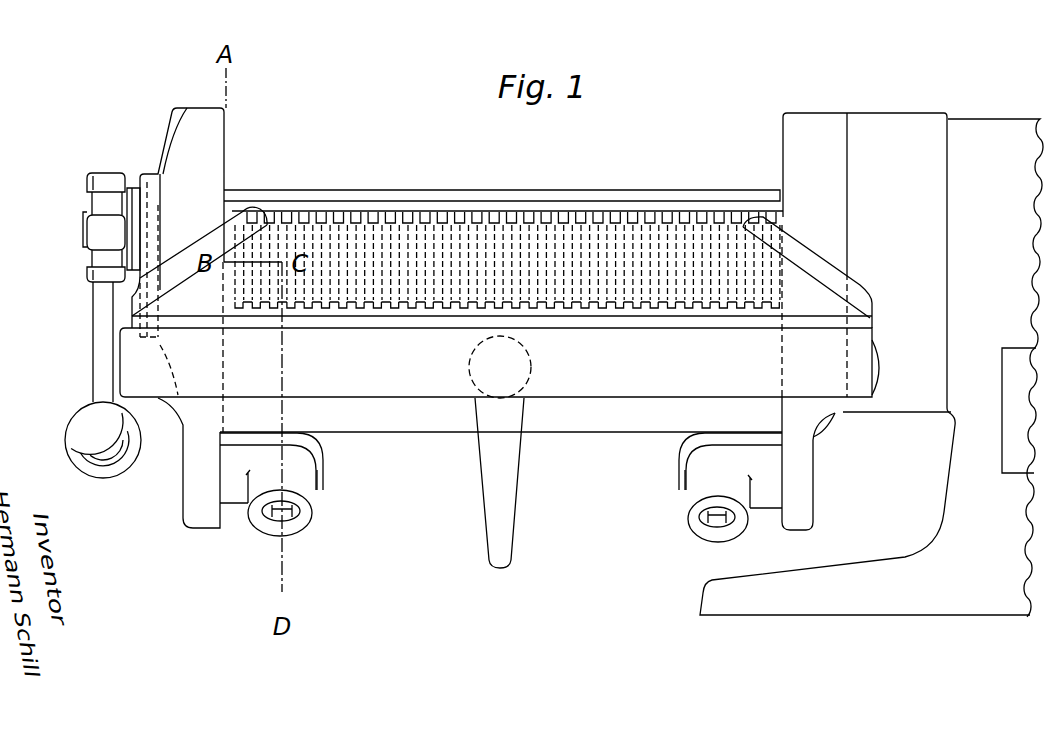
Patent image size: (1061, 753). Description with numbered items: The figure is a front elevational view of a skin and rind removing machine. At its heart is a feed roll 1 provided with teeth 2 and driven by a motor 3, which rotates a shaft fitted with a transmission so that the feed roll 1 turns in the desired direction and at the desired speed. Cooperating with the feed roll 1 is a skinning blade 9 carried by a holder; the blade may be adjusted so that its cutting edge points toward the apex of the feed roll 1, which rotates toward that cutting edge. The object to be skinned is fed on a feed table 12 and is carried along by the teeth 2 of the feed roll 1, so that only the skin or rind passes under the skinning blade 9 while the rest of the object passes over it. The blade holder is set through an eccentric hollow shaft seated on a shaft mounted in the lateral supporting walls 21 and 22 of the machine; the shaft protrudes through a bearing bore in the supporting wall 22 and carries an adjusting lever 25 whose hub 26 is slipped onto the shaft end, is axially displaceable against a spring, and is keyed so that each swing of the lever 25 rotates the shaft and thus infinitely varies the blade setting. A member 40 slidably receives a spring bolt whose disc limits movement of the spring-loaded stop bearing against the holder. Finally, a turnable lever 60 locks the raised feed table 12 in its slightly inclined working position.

The feed roll 1 is at (458, 220).
The teeth 2 is at (610, 213).
The motor 3 is at (990, 137).
The skinning blade 9 is at (341, 197).
The feed table 12 is at (793, 283).
The lateral supporting wall 21 is at (788, 133).
The lateral supporting wall 22 is at (210, 130).
The adjusting lever 25 is at (97, 345).
The hub 26 is at (101, 197).
The member 40 is at (305, 491).
The turnable lever 60 is at (497, 512).